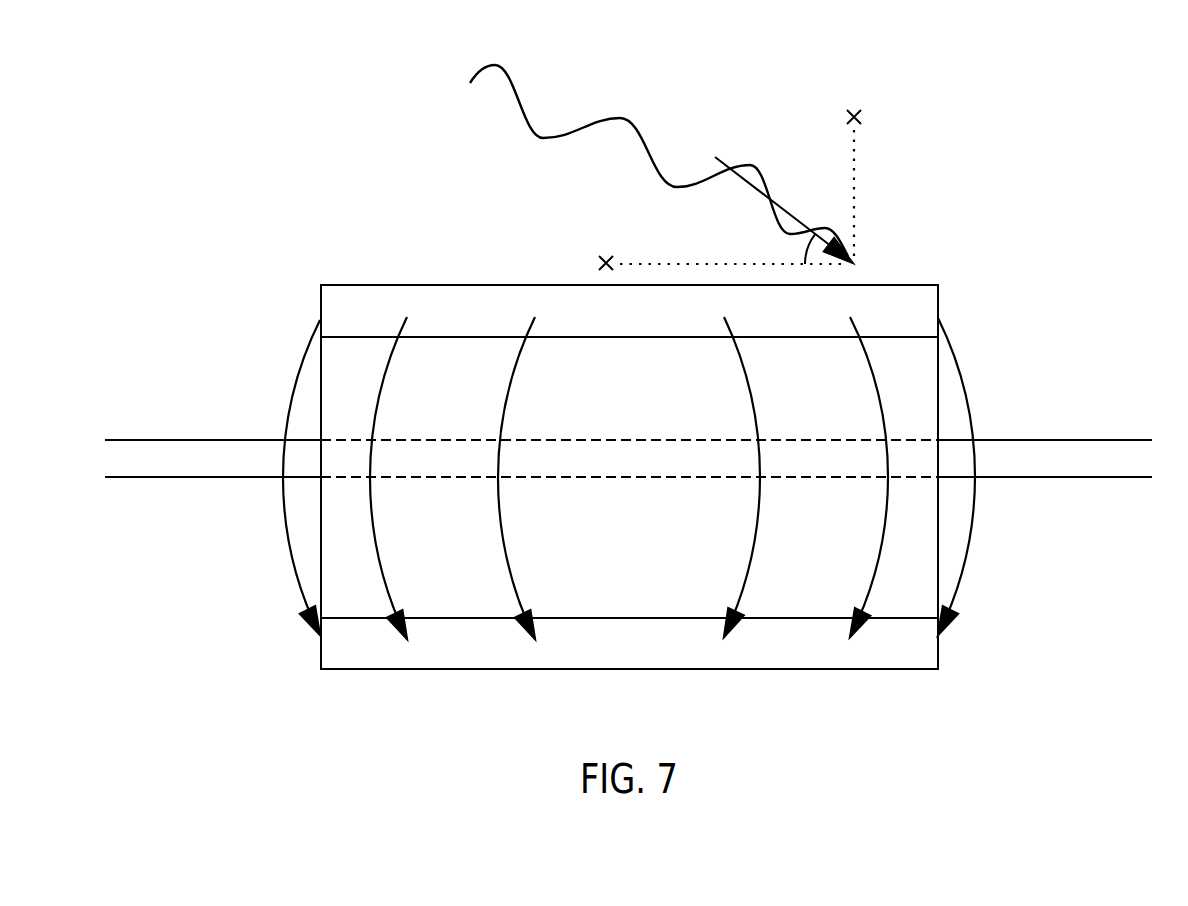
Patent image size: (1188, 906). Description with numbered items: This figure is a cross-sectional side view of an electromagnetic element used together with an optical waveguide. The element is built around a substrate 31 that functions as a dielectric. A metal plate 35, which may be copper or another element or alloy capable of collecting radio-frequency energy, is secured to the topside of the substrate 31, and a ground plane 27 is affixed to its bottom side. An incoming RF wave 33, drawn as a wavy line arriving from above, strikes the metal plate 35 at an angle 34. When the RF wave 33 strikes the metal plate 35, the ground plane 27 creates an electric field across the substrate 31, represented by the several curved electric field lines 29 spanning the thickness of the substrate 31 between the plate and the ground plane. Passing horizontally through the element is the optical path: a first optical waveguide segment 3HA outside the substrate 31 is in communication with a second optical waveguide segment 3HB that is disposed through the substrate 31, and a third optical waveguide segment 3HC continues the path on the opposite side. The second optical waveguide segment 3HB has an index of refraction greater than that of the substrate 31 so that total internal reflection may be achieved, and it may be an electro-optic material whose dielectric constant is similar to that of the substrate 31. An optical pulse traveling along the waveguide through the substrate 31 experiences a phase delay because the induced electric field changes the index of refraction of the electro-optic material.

The ground plane 27 is at (453, 657).
The electric field line 29 is at (278, 538).
The substrate 31 is at (440, 363).
The RF wave 33 is at (617, 118).
The angle 34 is at (803, 258).
The metal plate 35 is at (918, 292).
The first optical waveguide segment 3HA is at (177, 460).
The second optical waveguide segment 3HB is at (475, 458).
The third optical waveguide segment 3HC is at (1095, 457).